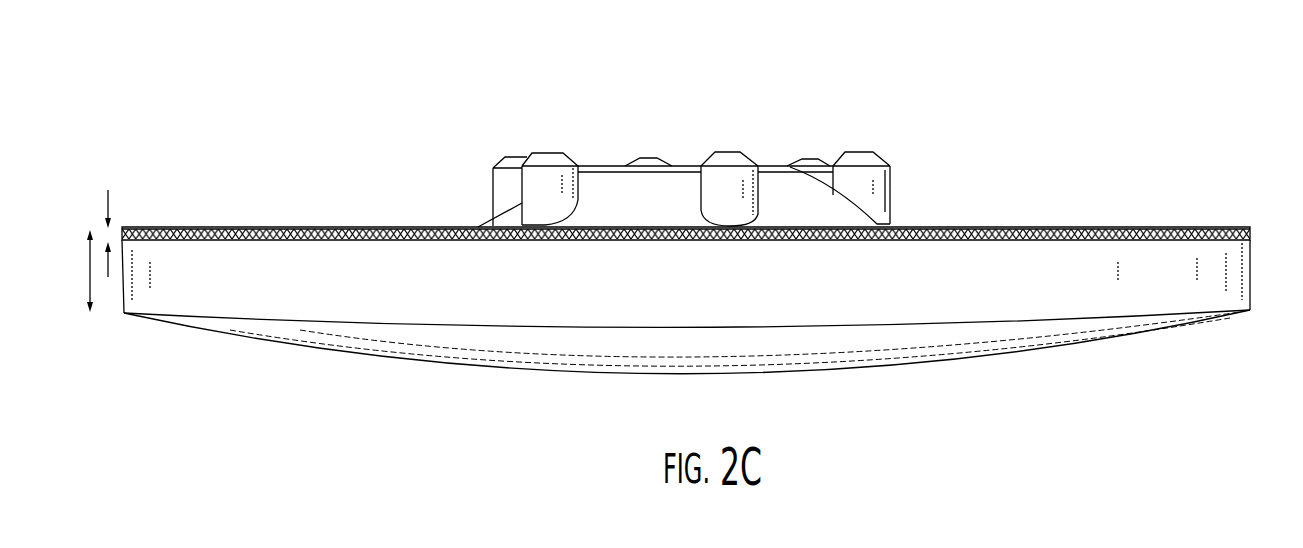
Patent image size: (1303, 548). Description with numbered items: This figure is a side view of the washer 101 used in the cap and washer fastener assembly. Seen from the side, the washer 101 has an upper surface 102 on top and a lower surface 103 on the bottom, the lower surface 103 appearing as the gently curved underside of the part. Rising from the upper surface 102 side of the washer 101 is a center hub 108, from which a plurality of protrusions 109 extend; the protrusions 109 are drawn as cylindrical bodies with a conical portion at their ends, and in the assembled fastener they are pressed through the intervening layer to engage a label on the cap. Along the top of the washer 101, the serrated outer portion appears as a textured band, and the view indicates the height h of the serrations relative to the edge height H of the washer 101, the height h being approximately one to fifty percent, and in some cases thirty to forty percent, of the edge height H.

The washer 101 is at (302, 84).
The upper surface 102 is at (1065, 227).
The lower surface 103 is at (377, 332).
The center hub 108 is at (795, 208).
The protrusions 109 is at (723, 188).
The height of the serrations h is at (110, 196).
The edge height of the washer H is at (75, 271).